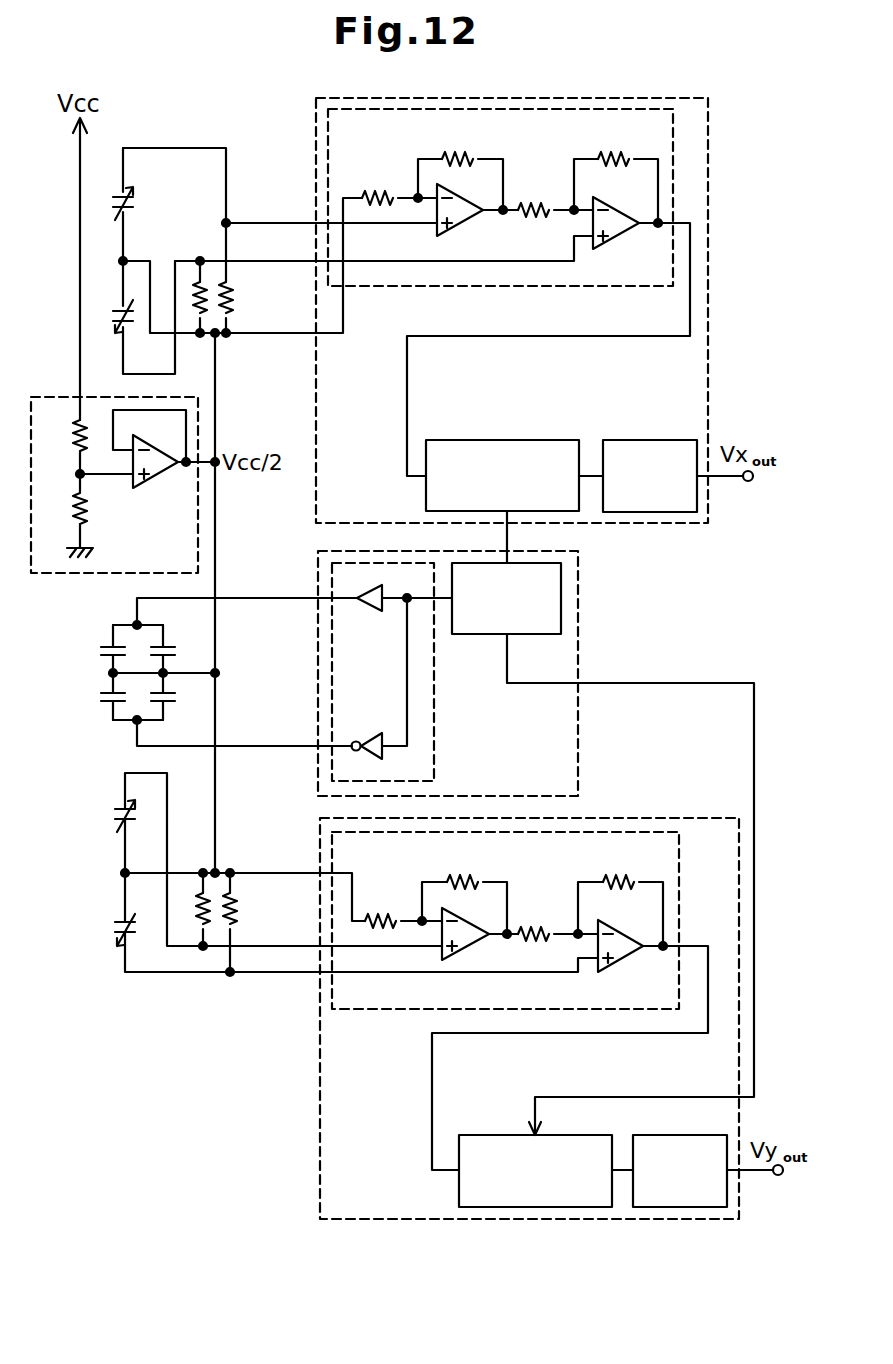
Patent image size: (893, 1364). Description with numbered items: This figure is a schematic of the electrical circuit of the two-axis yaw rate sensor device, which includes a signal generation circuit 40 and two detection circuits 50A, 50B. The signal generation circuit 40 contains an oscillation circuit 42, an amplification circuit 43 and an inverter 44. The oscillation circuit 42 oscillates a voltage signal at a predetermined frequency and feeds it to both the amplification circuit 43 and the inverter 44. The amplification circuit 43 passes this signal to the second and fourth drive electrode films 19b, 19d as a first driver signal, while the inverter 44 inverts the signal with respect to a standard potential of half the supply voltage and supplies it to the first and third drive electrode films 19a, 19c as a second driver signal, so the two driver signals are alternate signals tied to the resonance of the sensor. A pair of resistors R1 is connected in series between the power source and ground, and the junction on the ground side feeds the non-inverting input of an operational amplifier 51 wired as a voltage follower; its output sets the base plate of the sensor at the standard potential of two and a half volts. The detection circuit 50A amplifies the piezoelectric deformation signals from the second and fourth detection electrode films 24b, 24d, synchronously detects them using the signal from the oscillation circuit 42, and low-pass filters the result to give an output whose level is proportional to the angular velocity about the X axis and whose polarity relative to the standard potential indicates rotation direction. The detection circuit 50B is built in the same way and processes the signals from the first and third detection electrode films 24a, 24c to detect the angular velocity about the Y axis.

The first drive electrode film 19a is at (192, 700).
The second drive electrode film 19b is at (104, 628).
The third drive electrode film 19c is at (104, 705).
The fourth drive electrode film 19d is at (192, 628).
The first detection electrode film 24a is at (118, 806).
The second detection electrode film 24b is at (138, 197).
The third detection electrode film 24c is at (118, 924).
The fourth detection electrode film 24d is at (110, 307).
The signal generation circuit 40 is at (585, 650).
The oscillation circuit 42 is at (473, 634).
The amplification circuit 43 is at (366, 611).
The inverter 44 is at (368, 734).
The detection circuit 50A is at (714, 145).
The detection circuit 50B is at (666, 812).
The operational amplifier 51 is at (157, 480).
The resistor R1 is at (73, 512).